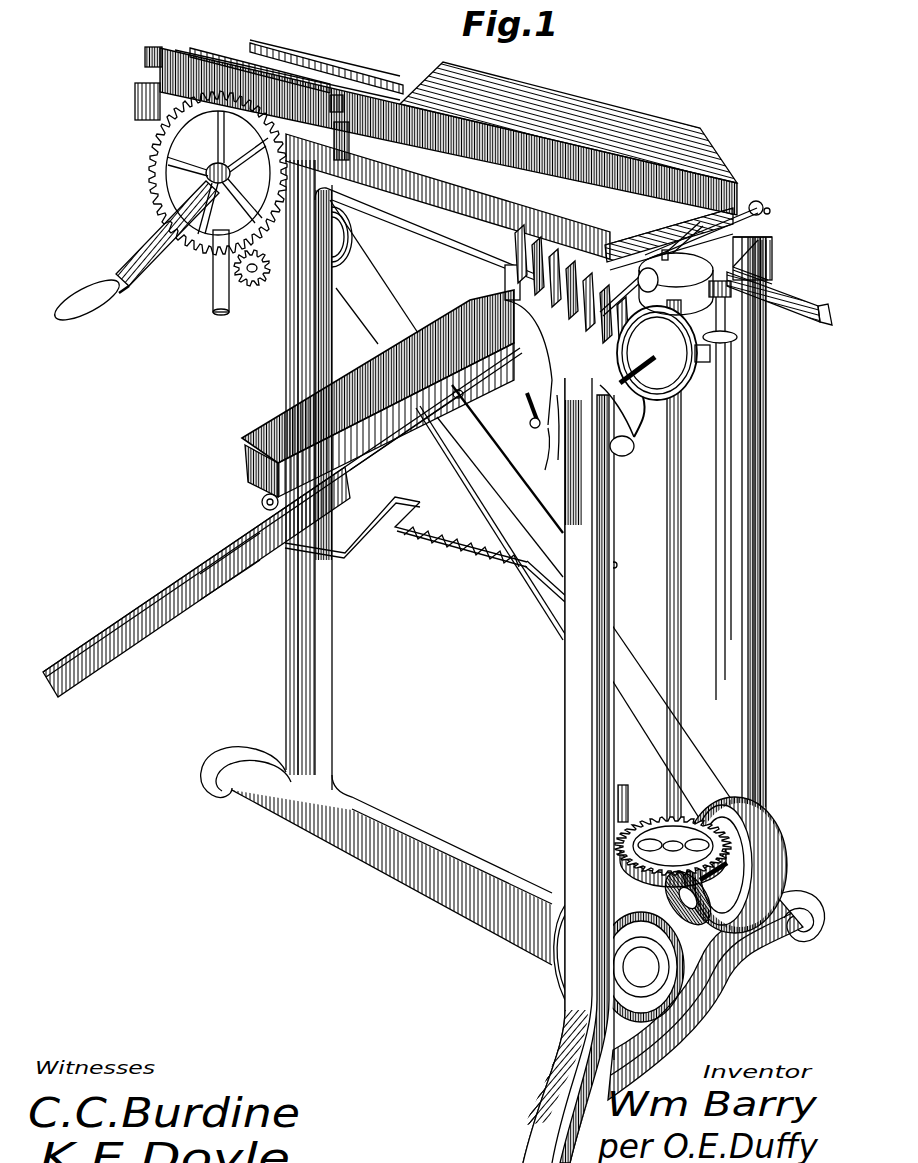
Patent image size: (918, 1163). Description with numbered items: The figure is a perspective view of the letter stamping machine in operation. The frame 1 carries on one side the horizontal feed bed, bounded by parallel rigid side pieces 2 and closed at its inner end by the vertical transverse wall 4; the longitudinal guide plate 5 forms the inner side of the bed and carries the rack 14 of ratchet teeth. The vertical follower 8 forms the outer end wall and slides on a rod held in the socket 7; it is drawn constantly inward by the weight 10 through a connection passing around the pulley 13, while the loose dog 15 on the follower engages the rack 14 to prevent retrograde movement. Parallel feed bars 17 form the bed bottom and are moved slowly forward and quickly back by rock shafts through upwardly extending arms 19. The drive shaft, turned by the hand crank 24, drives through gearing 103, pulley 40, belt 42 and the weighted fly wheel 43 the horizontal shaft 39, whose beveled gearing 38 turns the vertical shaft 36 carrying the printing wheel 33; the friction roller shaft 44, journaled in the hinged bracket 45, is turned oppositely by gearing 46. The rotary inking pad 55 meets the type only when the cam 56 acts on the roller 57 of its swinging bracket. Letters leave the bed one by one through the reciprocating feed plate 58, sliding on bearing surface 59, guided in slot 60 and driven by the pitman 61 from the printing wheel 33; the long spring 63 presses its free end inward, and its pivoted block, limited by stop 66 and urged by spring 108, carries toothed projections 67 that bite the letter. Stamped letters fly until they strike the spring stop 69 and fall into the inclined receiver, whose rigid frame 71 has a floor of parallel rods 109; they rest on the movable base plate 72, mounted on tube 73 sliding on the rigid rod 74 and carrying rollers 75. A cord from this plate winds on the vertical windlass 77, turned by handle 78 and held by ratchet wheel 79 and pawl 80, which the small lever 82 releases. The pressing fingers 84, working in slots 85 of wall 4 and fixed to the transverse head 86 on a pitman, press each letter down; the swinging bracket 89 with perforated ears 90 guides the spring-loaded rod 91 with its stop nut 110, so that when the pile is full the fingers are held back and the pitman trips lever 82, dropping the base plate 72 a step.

The frame 1 is at (435, 222).
The side pieces 2 is at (296, 75).
The vertical transverse wall 4 is at (692, 215).
The guide plate 5 is at (436, 153).
The socket 7 is at (808, 328).
The follower 8 is at (440, 72).
The weight 10 is at (213, 300).
The pulley 13 is at (406, 430).
The rack 14 is at (308, 72).
The loose dog 15 is at (338, 96).
The feed bars 17 is at (262, 68).
The arms 19 is at (307, 90).
The hand crank 24 is at (140, 238).
The printing wheel 33 is at (675, 282).
The vertical shaft 36 is at (678, 566).
The beveled gearing 38 is at (652, 882).
The horizontal shaft 39 is at (735, 871).
The pulley 40 is at (345, 270).
The belt 42 is at (562, 636).
The fly wheel 43 is at (546, 962).
The vertical shaft 44 is at (626, 668).
The bracket 45 is at (625, 788).
The gearing 46 is at (642, 820).
The rotary inking pad 55 is at (735, 300).
The cam 56 is at (703, 360).
The roller 57 is at (737, 345).
The reciprocating feed plate 58 is at (678, 215).
The bearing surface 59 is at (770, 208).
The slot 60 is at (753, 202).
The pitman 61 is at (760, 236).
The long spring 63 is at (772, 258).
The stop 66 is at (772, 280).
The toothed projections 67 is at (665, 228).
The spring stop 69 is at (556, 430).
The rigid frame 71 is at (192, 580).
The movable base plate 72 is at (262, 476).
The elongated tube 73 is at (405, 466).
The rigid rod 74 is at (262, 560).
The rollers 75 is at (262, 507).
The vertical windlass 77 is at (647, 398).
The handle 78 is at (630, 452).
The ratchet wheel 79 is at (684, 392).
The pawl 80 is at (640, 434).
The small lever 82 is at (618, 566).
The pressing fingers 84 is at (505, 272).
The slots 85 is at (530, 423).
The transverse head 86 is at (548, 433).
The swinging bracket 89 is at (352, 527).
The perforated ears 90 is at (416, 550).
The rod 91 is at (545, 593).
The gearing 103 is at (233, 257).
The spring 108 is at (705, 224).
The longitudinal rods 109 is at (245, 585).
The stop nut 110 is at (420, 528).